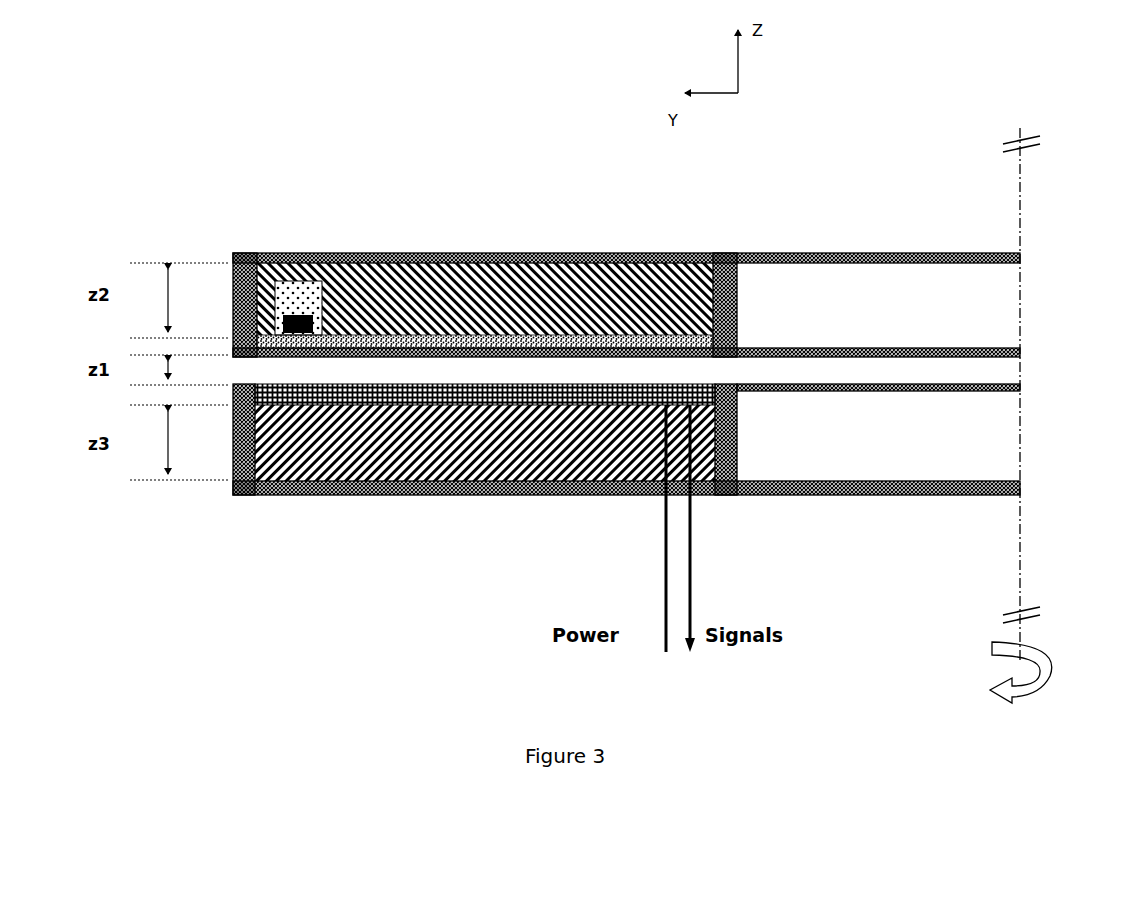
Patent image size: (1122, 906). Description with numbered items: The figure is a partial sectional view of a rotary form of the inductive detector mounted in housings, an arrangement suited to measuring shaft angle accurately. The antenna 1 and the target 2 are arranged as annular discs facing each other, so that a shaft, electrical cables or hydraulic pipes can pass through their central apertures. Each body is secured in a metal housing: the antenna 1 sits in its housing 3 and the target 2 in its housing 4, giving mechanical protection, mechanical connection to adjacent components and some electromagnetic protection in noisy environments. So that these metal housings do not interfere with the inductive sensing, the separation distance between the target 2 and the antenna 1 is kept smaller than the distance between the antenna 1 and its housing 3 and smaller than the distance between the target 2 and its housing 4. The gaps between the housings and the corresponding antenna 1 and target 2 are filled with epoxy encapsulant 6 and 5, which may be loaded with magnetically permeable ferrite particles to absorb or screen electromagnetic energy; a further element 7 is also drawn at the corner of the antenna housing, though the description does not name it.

The antenna 1 is at (737, 392).
The target 2 is at (737, 341).
The housing 3 is at (617, 493).
The housing 4 is at (655, 256).
The epoxy encapsulant 5 is at (737, 298).
The epoxy encapsulant 6 is at (537, 425).
The stator housing 7 is at (609, 253).